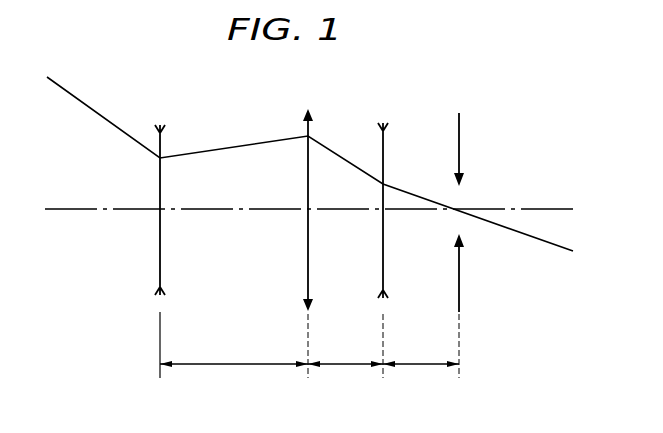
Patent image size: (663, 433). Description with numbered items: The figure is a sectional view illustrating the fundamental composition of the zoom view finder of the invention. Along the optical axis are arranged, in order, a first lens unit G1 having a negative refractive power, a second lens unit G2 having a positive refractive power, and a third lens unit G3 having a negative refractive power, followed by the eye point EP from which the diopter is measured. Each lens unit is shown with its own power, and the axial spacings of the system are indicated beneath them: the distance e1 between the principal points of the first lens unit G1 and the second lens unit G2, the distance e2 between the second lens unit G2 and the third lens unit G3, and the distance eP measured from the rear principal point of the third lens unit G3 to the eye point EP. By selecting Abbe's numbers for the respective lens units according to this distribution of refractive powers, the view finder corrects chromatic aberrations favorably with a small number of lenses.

The first lens unit G1 is at (160, 177).
The second lens unit G2 is at (307, 185).
The third lens unit G3 is at (383, 179).
The eye point EP is at (460, 186).
The distance between the principal points of the first and second lens units e1 is at (234, 355).
The distance between the second and third lens units e2 is at (345, 355).
The distance from the rear principal point of the third lens unit to the eye point eP is at (421, 355).